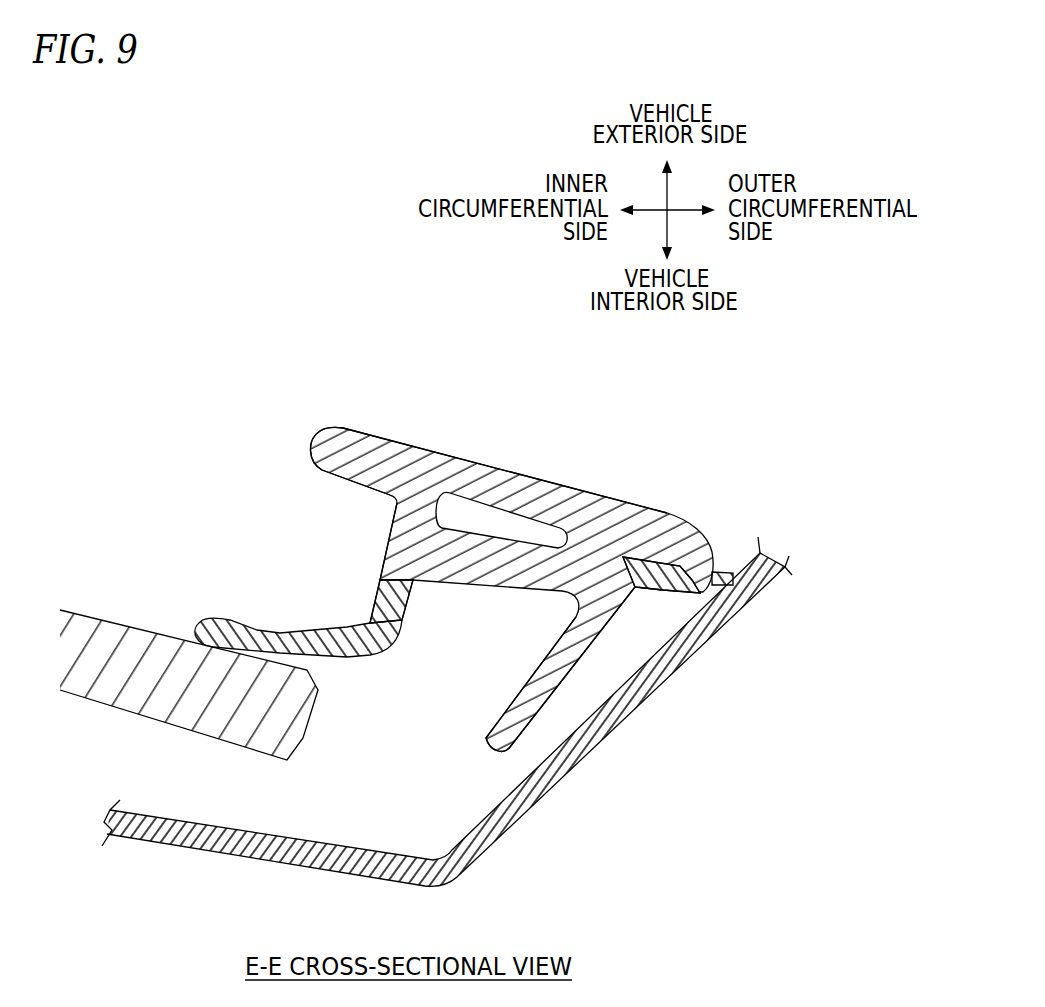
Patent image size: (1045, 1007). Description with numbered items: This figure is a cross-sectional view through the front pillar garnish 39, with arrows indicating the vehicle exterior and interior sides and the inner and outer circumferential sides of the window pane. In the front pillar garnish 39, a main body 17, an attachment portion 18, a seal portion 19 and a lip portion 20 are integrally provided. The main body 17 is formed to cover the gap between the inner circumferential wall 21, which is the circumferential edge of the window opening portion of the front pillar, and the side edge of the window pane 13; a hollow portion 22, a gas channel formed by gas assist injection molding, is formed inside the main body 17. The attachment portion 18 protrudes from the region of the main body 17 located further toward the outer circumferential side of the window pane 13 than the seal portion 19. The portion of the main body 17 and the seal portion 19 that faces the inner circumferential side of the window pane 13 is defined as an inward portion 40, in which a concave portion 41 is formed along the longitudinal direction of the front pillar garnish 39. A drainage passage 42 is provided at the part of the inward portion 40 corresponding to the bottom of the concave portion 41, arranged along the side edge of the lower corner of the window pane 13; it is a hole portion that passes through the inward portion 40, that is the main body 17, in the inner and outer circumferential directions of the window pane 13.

The window pane 13 is at (110, 622).
The main body 17 is at (448, 465).
The attachment portion 18 is at (533, 702).
The seal portion 19 is at (217, 616).
The lip portion 20 is at (726, 572).
The inner circumferential wall 21 is at (672, 627).
The hollow portion 22 is at (486, 512).
The front pillar garnish 39 is at (488, 588).
The inward portion 40 is at (310, 450).
The concave portion 41 is at (391, 540).
The drainage passage 42 is at (379, 595).